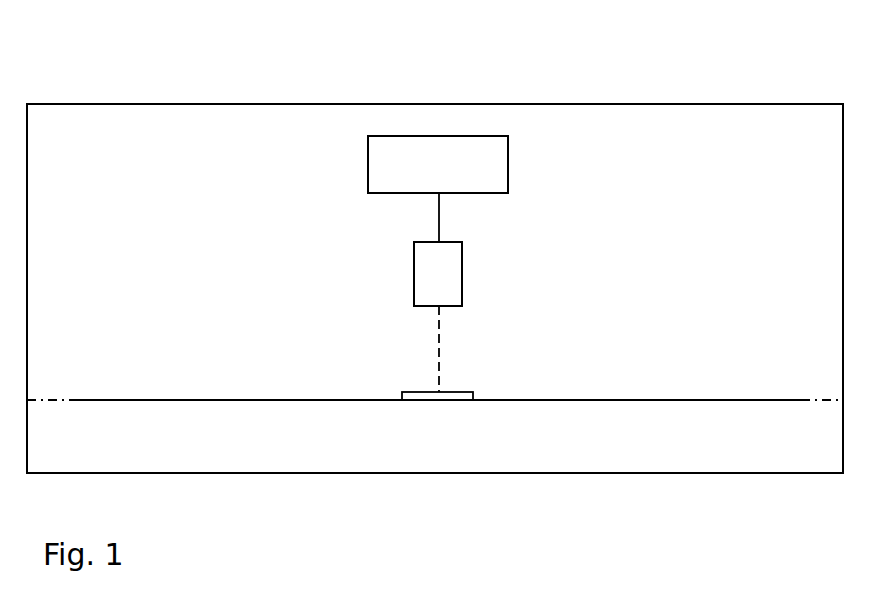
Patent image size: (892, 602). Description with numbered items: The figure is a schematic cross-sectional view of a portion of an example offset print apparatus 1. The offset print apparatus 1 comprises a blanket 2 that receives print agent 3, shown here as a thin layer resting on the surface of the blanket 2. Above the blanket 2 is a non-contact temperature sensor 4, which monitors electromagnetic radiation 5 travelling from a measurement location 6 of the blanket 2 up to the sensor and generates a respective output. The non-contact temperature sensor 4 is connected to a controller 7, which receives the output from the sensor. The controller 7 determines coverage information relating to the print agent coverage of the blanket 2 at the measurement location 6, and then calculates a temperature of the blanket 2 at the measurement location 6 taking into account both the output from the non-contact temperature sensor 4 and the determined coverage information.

The offset print apparatus 1 is at (648, 104).
The blanket 2 is at (609, 400).
The print agent 3 is at (473, 392).
The non-contact temperature sensor 4 is at (462, 272).
The electromagnetic radiation 5 is at (418, 350).
The measurement location 6 is at (441, 425).
The controller 7 is at (368, 167).